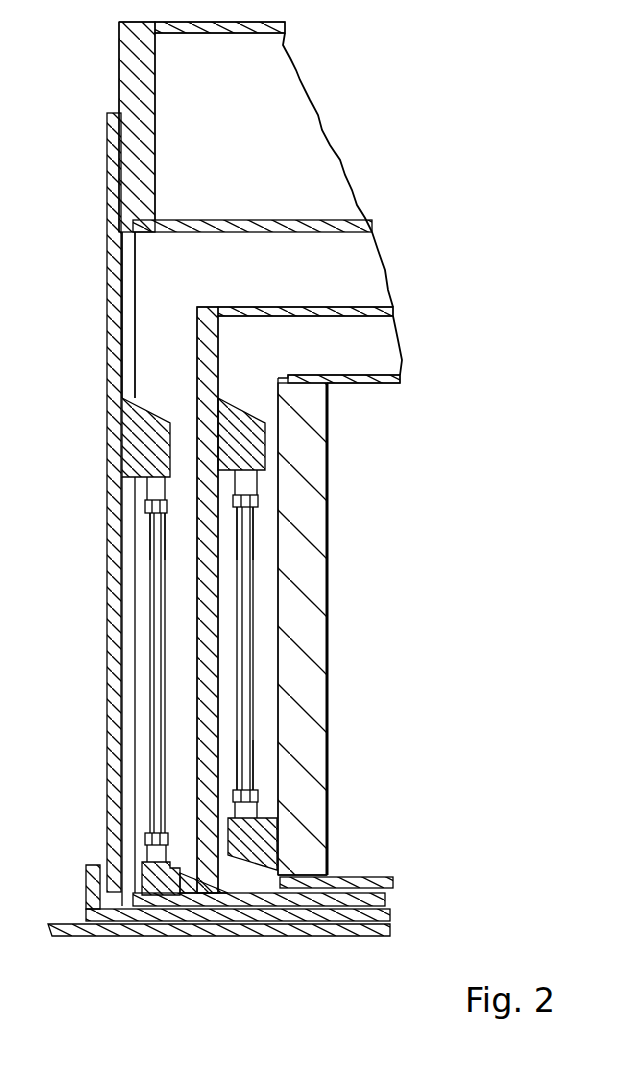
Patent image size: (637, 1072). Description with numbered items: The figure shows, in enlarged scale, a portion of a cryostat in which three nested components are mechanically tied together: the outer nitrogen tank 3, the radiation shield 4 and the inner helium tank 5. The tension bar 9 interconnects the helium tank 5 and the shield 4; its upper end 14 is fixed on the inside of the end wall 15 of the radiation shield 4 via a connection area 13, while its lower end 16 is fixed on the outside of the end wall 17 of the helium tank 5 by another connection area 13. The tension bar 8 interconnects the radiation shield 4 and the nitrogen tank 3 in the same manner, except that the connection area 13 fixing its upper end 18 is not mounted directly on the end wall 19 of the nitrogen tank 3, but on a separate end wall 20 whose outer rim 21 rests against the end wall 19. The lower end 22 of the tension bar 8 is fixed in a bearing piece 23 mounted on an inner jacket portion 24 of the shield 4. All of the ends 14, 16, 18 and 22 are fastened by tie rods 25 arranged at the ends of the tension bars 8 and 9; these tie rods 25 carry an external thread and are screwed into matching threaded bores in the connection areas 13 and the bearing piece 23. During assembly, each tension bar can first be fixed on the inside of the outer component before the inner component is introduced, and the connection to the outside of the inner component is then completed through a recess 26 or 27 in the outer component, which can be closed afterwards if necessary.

The nitrogen tank 3 is at (253, 93).
The radiation shield 4 is at (318, 303).
The helium tank 5 is at (350, 397).
The tension bar 8 is at (157, 612).
The tension bar 9 is at (248, 653).
The connection area 13 is at (140, 430).
The upper end 14 is at (250, 510).
The end wall 15 is at (207, 340).
The lower end 16 is at (250, 775).
The end wall 17 is at (305, 585).
The upper end 18 is at (153, 530).
The end wall 19 is at (132, 68).
The end wall 20 is at (112, 392).
The outer rim 21 is at (108, 147).
The lower end 22 is at (140, 838).
The bearing piece 23 is at (152, 920).
The inner jacket portion 24 is at (392, 893).
The tie rod 25 is at (152, 492).
The recess 26 is at (198, 912).
The recess 27 is at (112, 863).